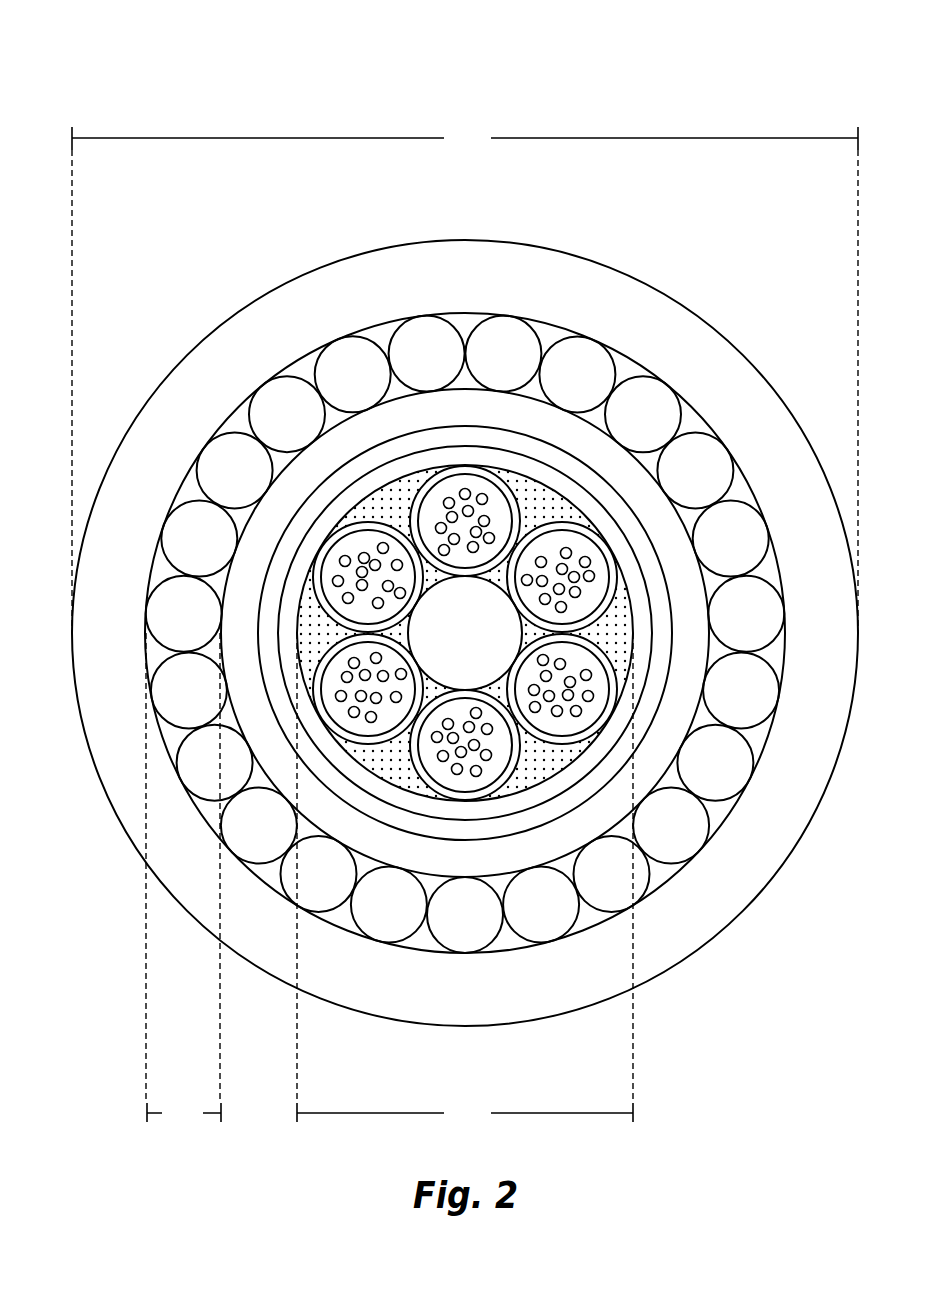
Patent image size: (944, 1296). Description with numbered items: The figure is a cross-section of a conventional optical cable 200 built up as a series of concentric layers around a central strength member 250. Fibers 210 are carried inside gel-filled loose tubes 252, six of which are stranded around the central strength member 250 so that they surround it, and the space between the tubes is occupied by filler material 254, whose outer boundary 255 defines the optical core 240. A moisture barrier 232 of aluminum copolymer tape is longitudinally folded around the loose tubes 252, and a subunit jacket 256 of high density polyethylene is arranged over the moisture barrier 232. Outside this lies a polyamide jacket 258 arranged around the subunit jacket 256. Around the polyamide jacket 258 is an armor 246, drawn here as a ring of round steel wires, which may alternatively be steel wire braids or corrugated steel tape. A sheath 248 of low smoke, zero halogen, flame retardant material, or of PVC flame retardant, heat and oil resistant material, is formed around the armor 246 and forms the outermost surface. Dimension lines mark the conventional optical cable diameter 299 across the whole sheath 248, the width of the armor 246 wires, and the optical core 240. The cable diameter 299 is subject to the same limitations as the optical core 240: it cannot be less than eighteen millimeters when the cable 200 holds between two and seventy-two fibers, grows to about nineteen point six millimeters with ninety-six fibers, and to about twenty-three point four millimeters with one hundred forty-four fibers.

The conventional optical cable 200 is at (124, 68).
The conventional optical cable diameter 299 is at (465, 378).
The sheath 248 is at (483, 1002).
The polyamide jacket 258 is at (483, 871).
The subunit jacket 256 is at (653, 688).
The moisture barrier 232 is at (485, 457).
The core boundary / binder 255 is at (300, 656).
The filler material 254 is at (289, 617).
The gel-filled loose tubes 252 is at (500, 482).
The fibers 210 is at (336, 598).
The central strength member 250 is at (482, 646).
The armor 246 is at (183, 880).
The optical core 240 is at (465, 880).